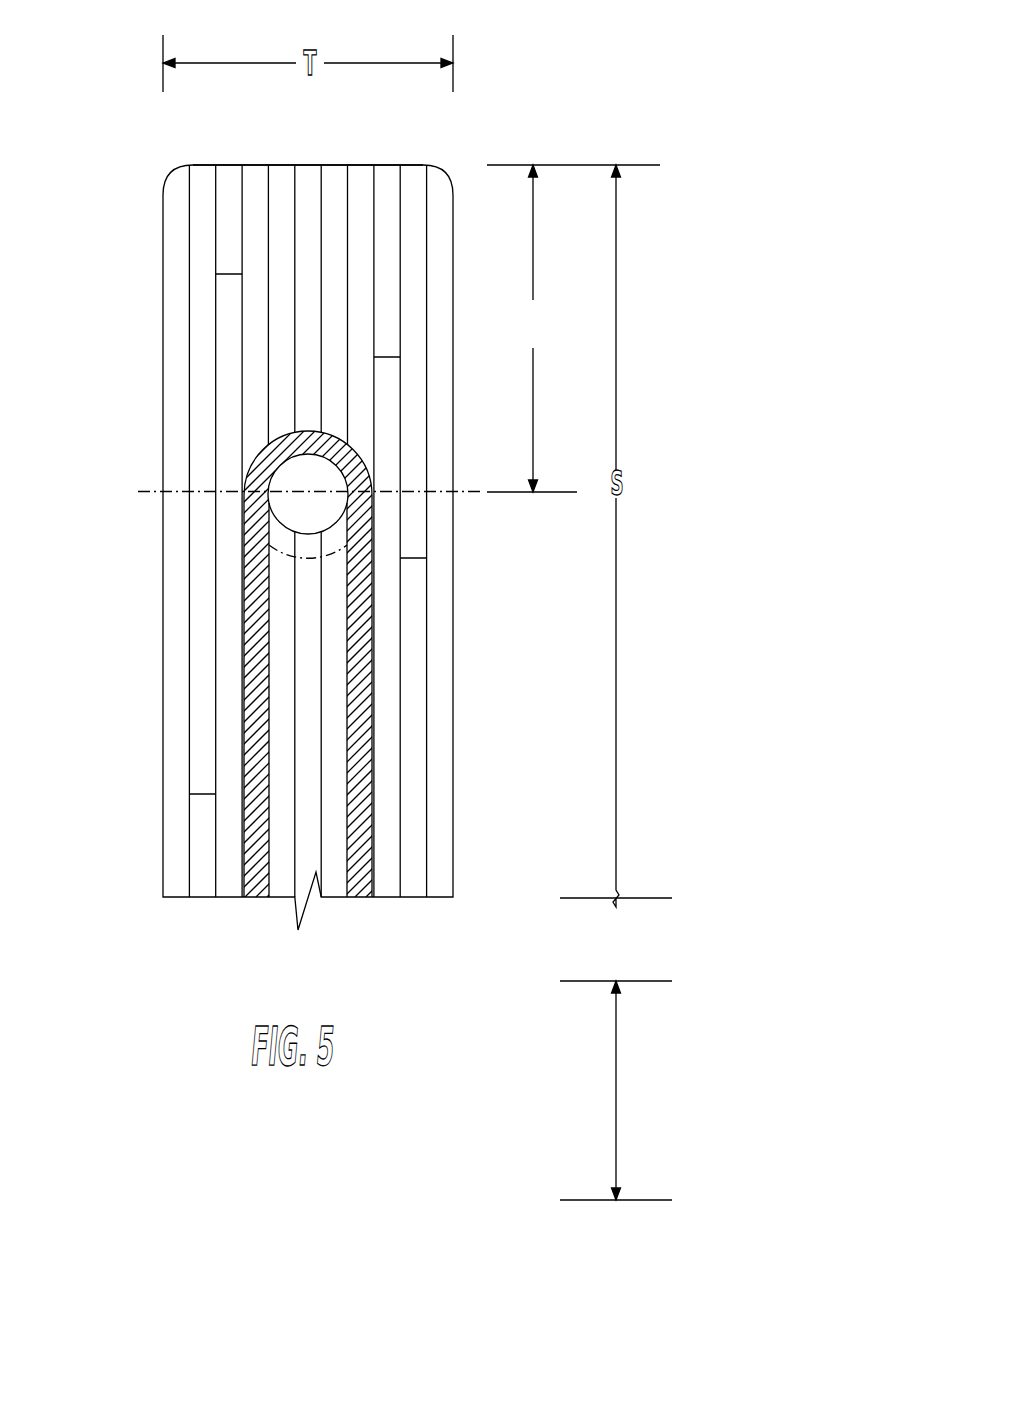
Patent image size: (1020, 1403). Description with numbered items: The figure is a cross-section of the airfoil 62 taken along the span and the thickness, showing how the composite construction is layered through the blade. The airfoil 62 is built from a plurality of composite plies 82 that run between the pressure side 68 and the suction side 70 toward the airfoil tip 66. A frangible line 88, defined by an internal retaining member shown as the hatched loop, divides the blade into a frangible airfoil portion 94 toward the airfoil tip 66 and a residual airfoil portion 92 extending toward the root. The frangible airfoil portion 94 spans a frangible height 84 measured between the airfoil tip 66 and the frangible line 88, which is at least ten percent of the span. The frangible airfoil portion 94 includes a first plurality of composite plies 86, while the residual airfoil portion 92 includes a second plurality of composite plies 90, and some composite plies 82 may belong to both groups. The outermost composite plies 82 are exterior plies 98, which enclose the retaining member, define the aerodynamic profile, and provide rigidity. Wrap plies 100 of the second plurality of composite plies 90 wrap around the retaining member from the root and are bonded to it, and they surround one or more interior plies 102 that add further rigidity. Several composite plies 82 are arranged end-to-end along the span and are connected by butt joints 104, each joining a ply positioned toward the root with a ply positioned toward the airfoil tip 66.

The airfoil 62 is at (528, 113).
The airfoil tip 66 is at (232, 168).
The pressure side 68 is at (168, 588).
The suction side 70 is at (453, 590).
The composite ply 82 is at (385, 165).
The frangible height 84 is at (532, 328).
The first plurality of composite plies 86 is at (140, 362).
The frangible line 88 is at (157, 490).
The second plurality of composite plies 90 is at (485, 712).
The residual airfoil portion 92 is at (122, 664).
The frangible airfoil portion 94 is at (140, 278).
The exterior plies 98 is at (453, 277).
The wrap plies 100 is at (370, 868).
The interior plies 102 is at (282, 886).
The butt joints 104 is at (412, 556).